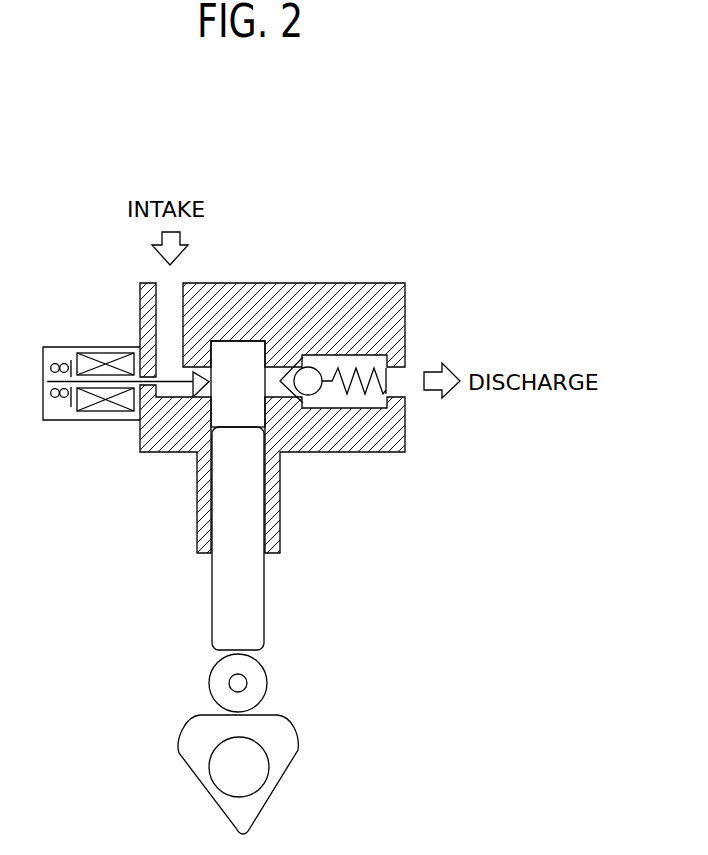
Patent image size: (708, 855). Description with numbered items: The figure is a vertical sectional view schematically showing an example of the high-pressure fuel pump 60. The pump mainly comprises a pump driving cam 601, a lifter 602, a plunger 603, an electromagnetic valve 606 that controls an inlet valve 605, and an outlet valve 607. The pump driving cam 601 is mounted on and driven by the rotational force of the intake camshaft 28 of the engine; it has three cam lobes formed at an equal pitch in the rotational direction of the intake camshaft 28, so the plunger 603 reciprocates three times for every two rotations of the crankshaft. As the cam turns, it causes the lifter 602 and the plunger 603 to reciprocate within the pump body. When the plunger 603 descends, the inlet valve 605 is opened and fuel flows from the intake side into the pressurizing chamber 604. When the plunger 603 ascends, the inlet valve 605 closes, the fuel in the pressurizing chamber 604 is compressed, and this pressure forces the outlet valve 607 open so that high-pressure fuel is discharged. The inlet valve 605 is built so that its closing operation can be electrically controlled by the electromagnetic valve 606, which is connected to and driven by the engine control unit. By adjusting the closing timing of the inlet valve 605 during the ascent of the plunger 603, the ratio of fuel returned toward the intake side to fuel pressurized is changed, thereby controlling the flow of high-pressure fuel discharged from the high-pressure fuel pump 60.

The high-pressure fuel pump 60 is at (311, 182).
The pump driving cam 601 is at (293, 777).
The lifter 602 is at (267, 675).
The plunger 603 is at (266, 602).
The pressurizing chamber 604 is at (243, 355).
The inlet valve 605 is at (190, 402).
The electromagnetic valve 606 is at (85, 346).
The outlet valve 607 is at (348, 354).
The intake camshaft 28 is at (268, 760).